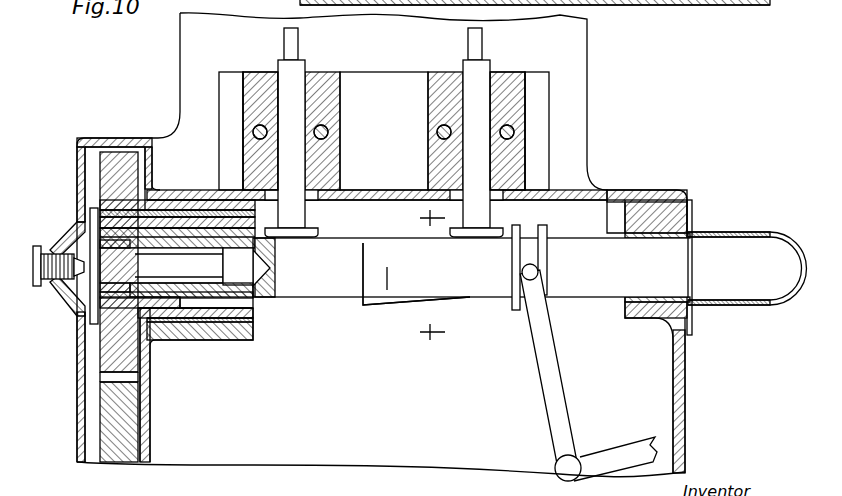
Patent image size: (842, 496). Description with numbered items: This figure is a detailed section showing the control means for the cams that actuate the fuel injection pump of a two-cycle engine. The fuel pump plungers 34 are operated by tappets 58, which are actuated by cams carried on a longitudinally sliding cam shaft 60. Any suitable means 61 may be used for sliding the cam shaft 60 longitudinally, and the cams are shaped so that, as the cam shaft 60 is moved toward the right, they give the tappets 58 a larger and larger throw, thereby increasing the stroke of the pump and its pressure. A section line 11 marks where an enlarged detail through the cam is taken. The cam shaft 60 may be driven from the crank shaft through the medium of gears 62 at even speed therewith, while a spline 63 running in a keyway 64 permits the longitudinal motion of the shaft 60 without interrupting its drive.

The section line 11— 11 is at (439, 271).
The fuel pump plungers 34 is at (291, 44).
The tappets 58 is at (482, 160).
The cam shaft 60 is at (529, 268).
The means for sliding the cam shaft 61 is at (550, 368).
The gears 62 is at (123, 423).
The spline 63 is at (114, 283).
The keyway 64 is at (160, 283).